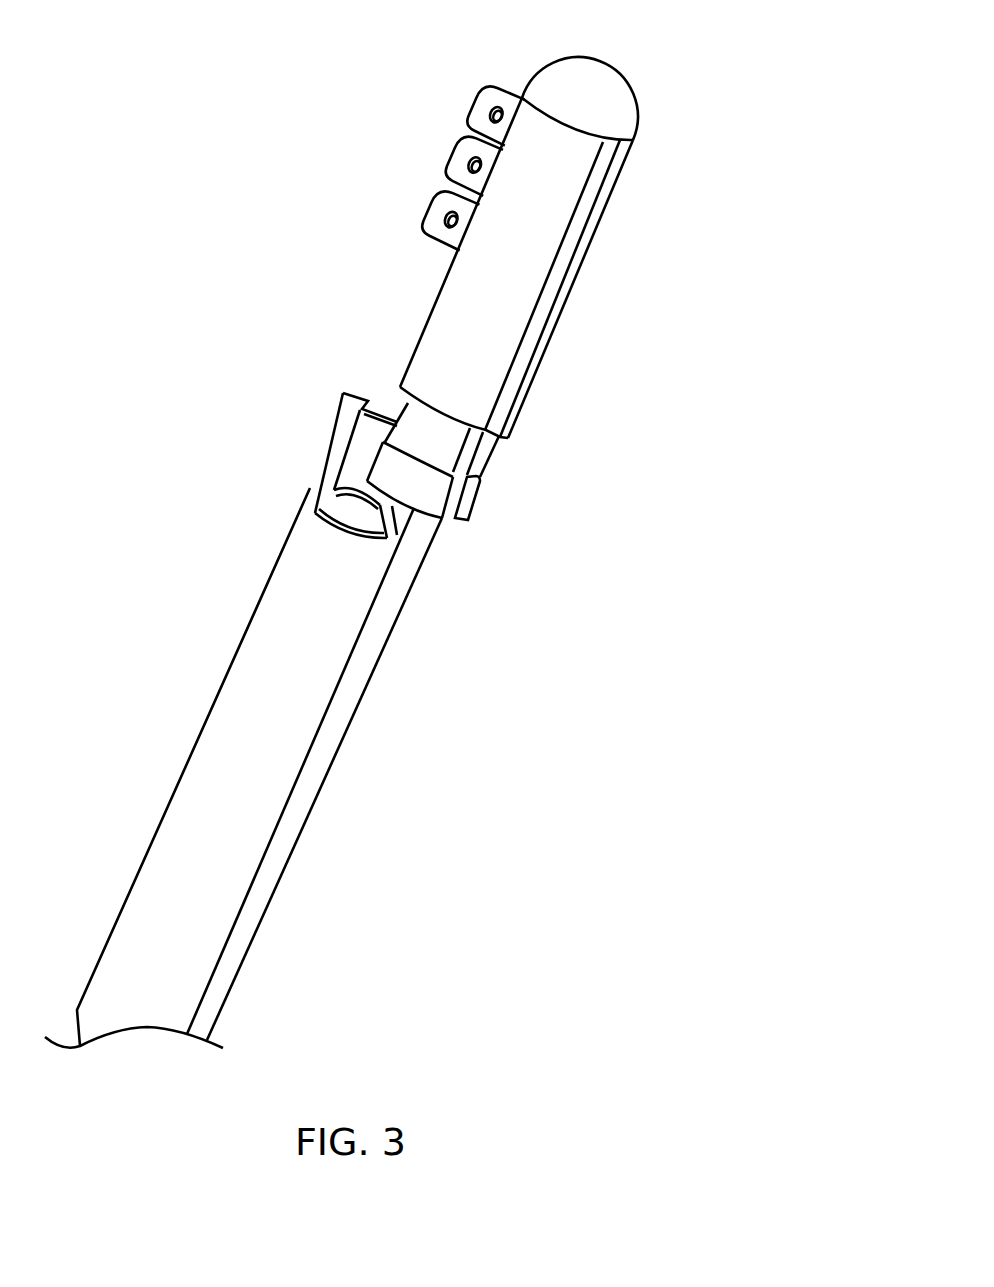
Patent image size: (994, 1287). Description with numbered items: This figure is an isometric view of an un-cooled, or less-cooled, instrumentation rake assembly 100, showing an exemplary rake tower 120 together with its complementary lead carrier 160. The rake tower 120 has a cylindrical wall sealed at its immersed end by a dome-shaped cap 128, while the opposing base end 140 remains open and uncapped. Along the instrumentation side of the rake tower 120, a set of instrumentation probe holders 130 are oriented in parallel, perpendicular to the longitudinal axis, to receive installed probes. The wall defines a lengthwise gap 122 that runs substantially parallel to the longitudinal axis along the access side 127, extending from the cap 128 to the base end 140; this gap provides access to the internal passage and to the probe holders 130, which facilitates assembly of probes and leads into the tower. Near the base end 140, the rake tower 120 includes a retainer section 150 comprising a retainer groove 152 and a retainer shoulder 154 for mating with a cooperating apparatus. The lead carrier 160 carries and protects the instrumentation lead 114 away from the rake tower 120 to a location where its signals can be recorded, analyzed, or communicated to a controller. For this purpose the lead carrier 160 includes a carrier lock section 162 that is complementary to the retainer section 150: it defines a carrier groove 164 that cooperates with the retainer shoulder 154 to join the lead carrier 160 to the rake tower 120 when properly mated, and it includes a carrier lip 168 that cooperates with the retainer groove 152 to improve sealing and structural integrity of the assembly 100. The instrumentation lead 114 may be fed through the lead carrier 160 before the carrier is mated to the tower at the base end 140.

The instrumentation rake assembly 100 is at (572, 627).
The instrumentation lead 114 is at (344, 704).
The rake tower 120 is at (505, 227).
The lengthwise gap 122 is at (517, 378).
The access side 127 is at (642, 153).
The dome-shaped cap 128 is at (602, 62).
The instrumentation probe holders 130 is at (460, 100).
The base end 140 is at (466, 466).
The retainer section 150 is at (396, 466).
The retainer groove 152 is at (430, 442).
The retainer shoulder 154 is at (397, 478).
The lead carrier 160 is at (249, 699).
The carrier lock section 162 is at (331, 485).
The carrier groove 164 is at (351, 510).
The carrier lip 168 is at (337, 393).